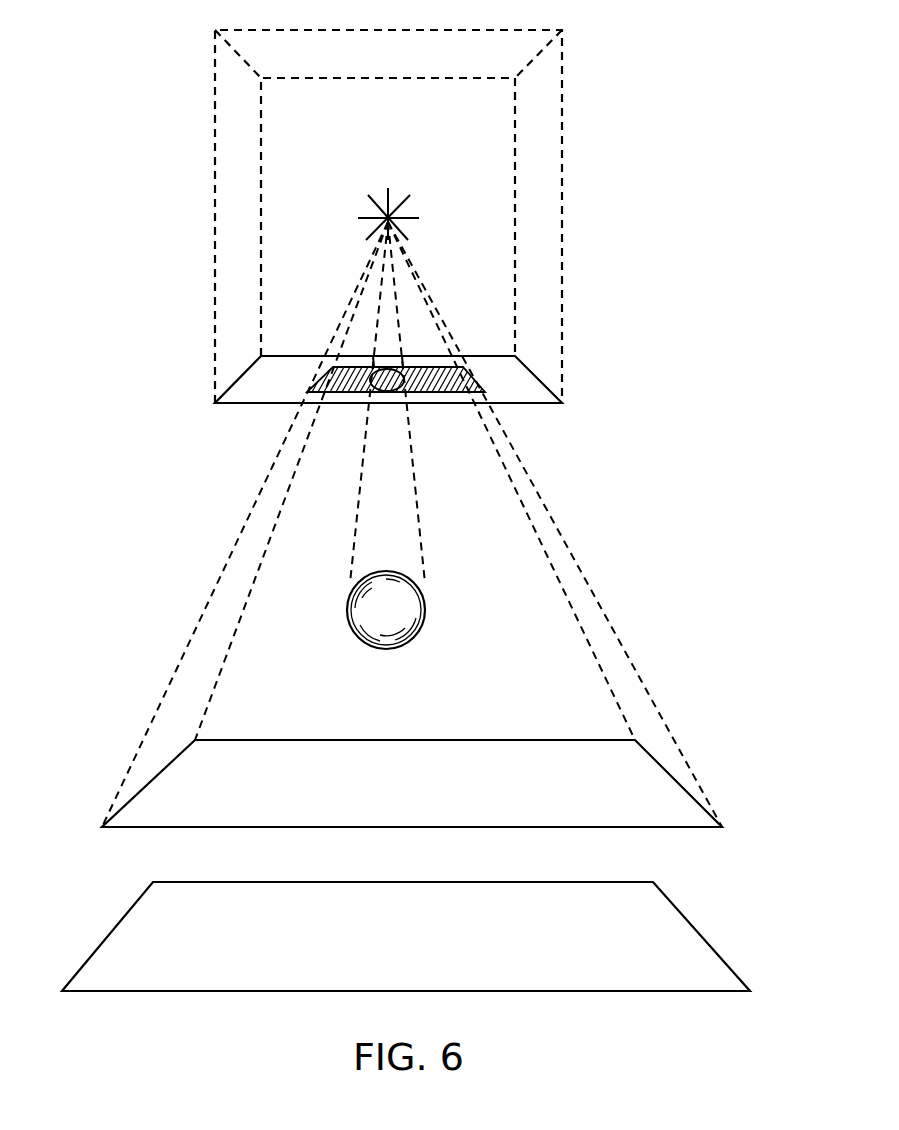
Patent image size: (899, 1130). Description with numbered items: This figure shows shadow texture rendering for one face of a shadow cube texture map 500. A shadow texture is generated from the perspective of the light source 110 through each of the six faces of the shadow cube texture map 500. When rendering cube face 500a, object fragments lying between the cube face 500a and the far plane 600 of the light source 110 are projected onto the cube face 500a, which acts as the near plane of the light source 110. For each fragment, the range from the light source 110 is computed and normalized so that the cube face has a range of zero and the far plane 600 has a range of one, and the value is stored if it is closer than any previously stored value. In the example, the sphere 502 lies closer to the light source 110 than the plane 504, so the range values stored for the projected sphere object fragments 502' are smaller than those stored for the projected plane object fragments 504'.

The light source 110 is at (368, 215).
The shadow cube texture map 500 is at (563, 219).
The cube face 500a is at (275, 390).
The sphere 502 is at (427, 610).
The projected sphere object fragments 502' is at (434, 417).
The plane 504 is at (412, 783).
The projected plane object fragments 504' is at (397, 435).
The far plane 600 is at (152, 922).